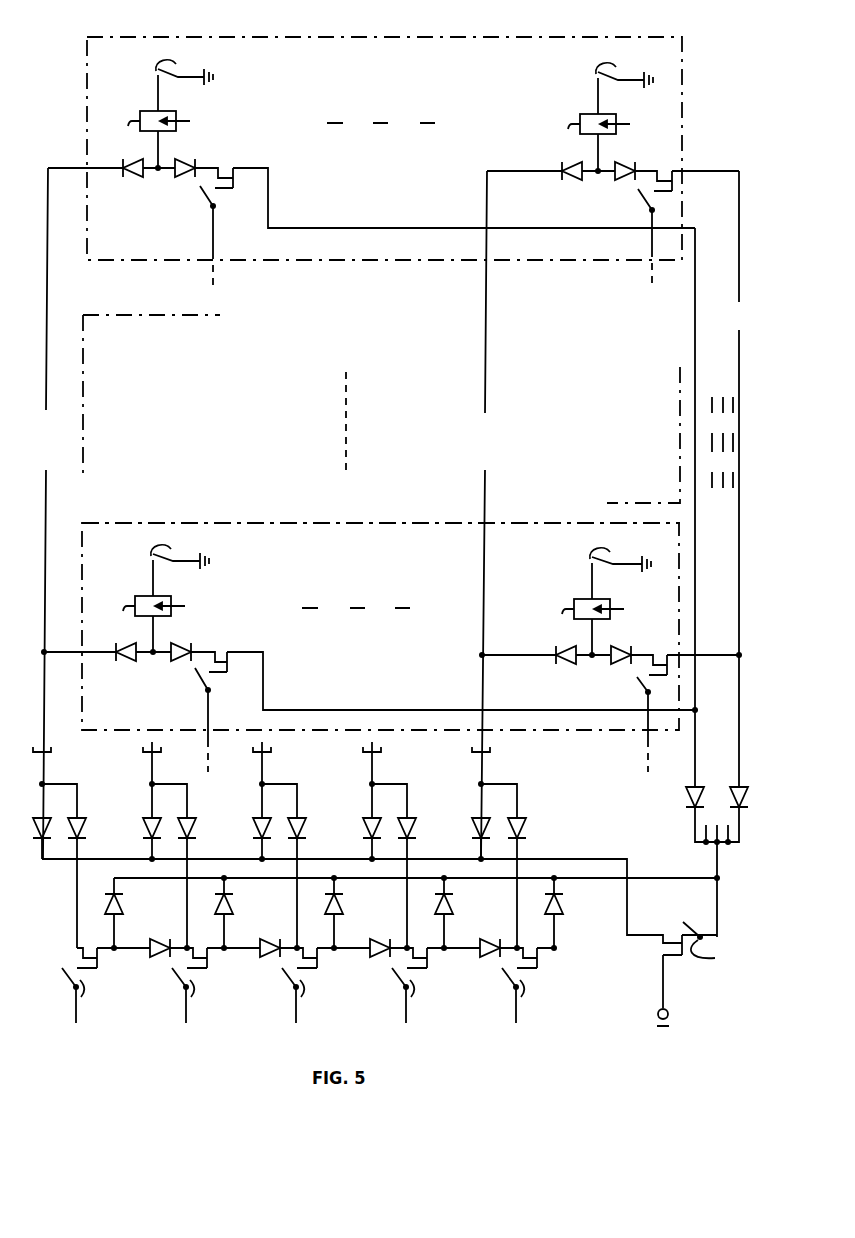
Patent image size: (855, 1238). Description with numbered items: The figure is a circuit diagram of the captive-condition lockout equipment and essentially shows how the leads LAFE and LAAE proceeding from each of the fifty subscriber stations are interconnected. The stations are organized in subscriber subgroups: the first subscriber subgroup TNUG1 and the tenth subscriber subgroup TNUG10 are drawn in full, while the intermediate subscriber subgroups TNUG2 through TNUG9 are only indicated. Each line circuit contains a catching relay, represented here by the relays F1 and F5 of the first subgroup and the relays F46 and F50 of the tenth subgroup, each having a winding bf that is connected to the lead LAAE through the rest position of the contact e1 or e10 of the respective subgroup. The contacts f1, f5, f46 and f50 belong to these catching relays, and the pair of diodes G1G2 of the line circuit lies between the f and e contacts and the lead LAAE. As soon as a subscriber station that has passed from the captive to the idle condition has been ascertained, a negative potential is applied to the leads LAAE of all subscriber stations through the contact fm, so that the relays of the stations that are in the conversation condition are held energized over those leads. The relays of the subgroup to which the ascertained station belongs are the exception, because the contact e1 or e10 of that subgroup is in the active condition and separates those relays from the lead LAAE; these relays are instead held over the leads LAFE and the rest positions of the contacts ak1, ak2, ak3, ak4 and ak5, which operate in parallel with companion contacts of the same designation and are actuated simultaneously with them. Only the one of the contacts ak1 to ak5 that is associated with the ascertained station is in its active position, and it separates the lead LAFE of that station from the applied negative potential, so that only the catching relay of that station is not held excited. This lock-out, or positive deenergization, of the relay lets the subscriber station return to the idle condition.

The subscriber subgroup TNUG1 is at (384, 148).
The subscriber subgroup TNUG2 is at (381, 419).
The subscriber subgroup TNUG9 is at (354, 441).
The subscriber subgroup TNUG10 is at (380, 626).
The lead LAFE is at (265, 513).
The lead LAAE is at (717, 554).
The catching relay F1 is at (180, 121).
The catching relay F5 is at (620, 124).
The catching relay F46 is at (181, 606).
The catching relay F50 is at (620, 609).
The catching relay contact f1 is at (168, 84).
The catching relay contact f5 is at (607, 87).
The catching relay contact f46 is at (154, 569).
The catching relay contact f50 is at (595, 572).
The contact e1 is at (420, 236).
The contact e10 is at (409, 720).
The winding bf is at (345, 364).
The diodes G1G2 is at (413, 538).
The contact ak1 is at (97, 985).
The contact ak2 is at (207, 985).
The contact ak3 is at (317, 985).
The contact ak4 is at (427, 985).
The contact ak5 is at (537, 985).
The contact fm is at (687, 974).